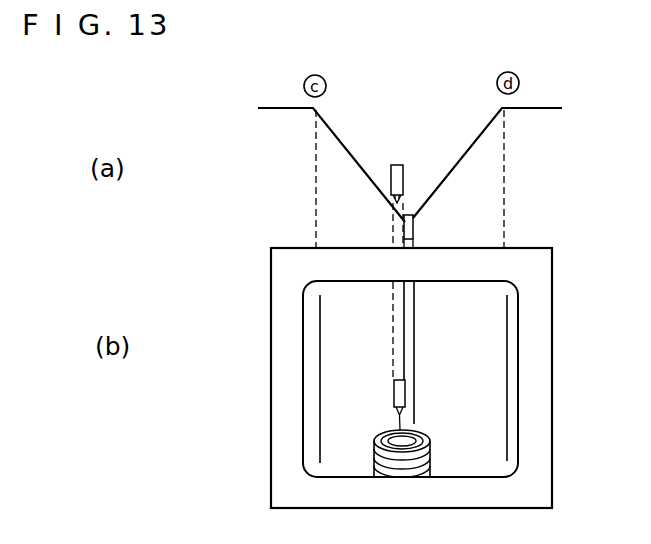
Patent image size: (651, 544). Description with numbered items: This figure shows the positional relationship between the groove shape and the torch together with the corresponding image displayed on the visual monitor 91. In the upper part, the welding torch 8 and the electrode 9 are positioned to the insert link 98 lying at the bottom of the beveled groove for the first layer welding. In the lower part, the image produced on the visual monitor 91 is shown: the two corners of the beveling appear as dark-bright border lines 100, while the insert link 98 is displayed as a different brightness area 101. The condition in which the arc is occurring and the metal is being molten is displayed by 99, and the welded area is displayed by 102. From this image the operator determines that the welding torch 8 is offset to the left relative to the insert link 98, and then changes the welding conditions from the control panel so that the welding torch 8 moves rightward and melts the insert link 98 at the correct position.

The welding torch 8 is at (398, 171).
The electrode 9 is at (403, 203).
The insert link 98 is at (413, 227).
The visual monitor 91 is at (271, 315).
The dark-bright border lines 100 is at (350, 308).
The different brightness area 101 is at (418, 368).
The arc and molten metal display 99 is at (418, 436).
The welded area display 102 is at (430, 467).